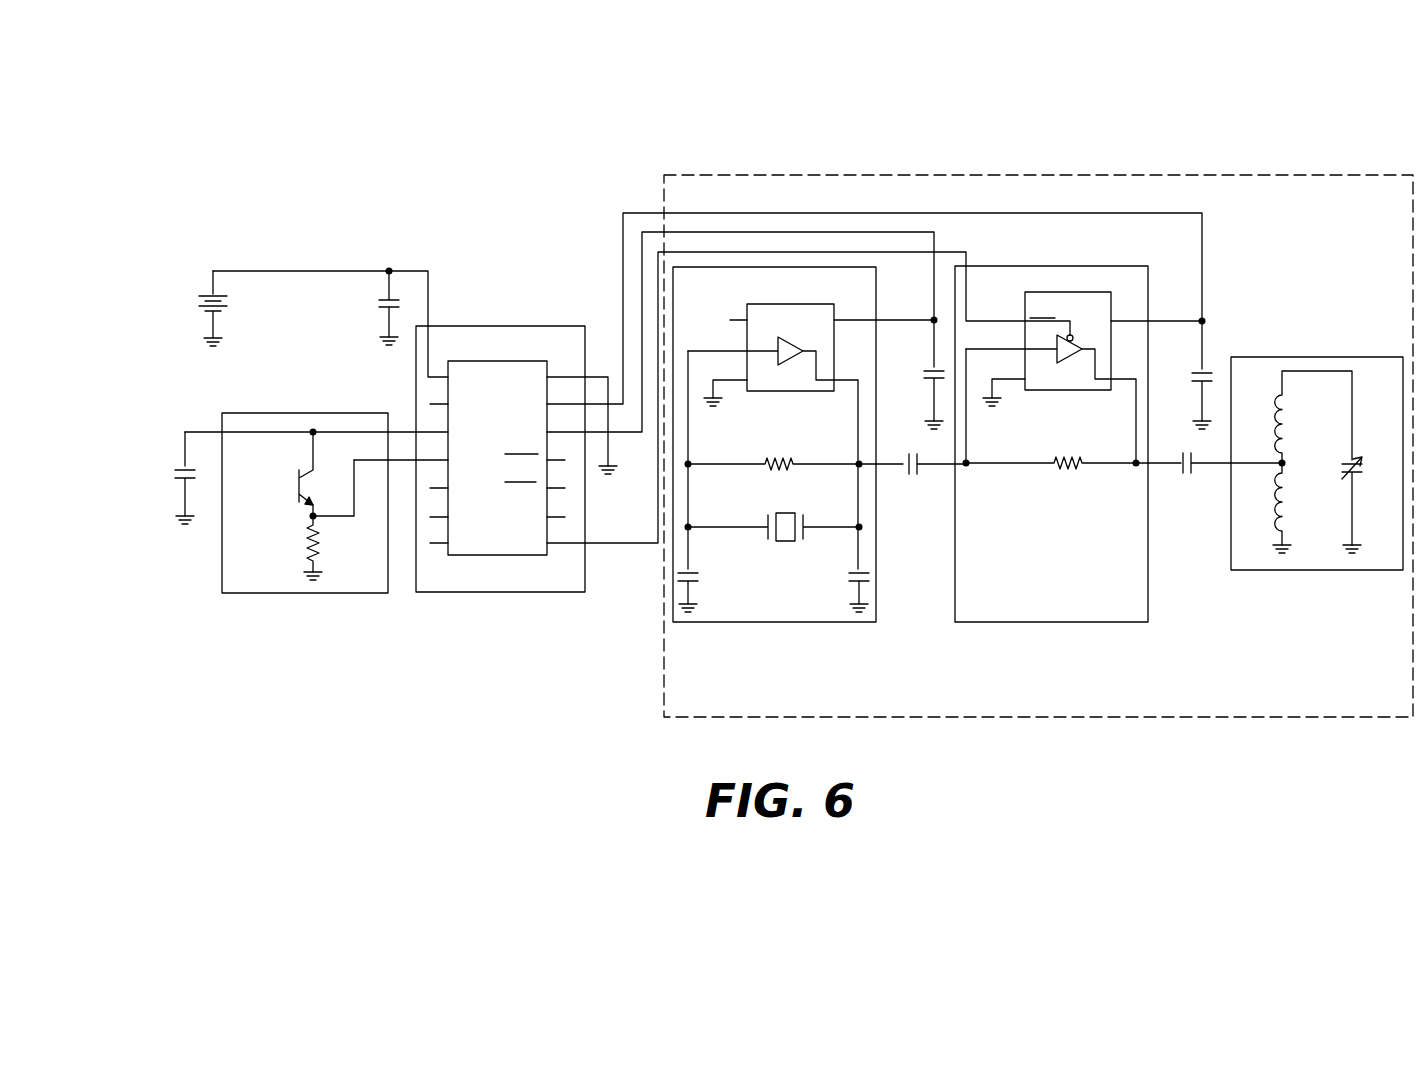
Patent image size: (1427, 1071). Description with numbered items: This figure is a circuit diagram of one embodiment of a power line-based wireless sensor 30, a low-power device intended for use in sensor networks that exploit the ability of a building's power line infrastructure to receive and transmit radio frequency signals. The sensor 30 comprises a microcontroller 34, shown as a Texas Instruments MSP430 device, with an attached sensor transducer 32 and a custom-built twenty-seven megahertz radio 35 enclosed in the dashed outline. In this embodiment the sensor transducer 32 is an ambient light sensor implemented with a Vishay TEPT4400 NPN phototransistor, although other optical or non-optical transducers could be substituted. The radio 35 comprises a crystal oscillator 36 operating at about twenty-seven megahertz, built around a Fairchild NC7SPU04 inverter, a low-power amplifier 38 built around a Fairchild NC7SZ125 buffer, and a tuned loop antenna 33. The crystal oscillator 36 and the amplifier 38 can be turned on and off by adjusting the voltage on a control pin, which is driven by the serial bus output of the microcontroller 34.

The power line-based wireless sensor 30 is at (483, 147).
The sensor transducer 32 is at (228, 412).
The tuned loop antenna 33 is at (1277, 357).
The microcontroller 34 is at (490, 326).
The radio 35 is at (1093, 175).
The crystal oscillator 36 is at (878, 620).
The amplifier 38 is at (1150, 618).